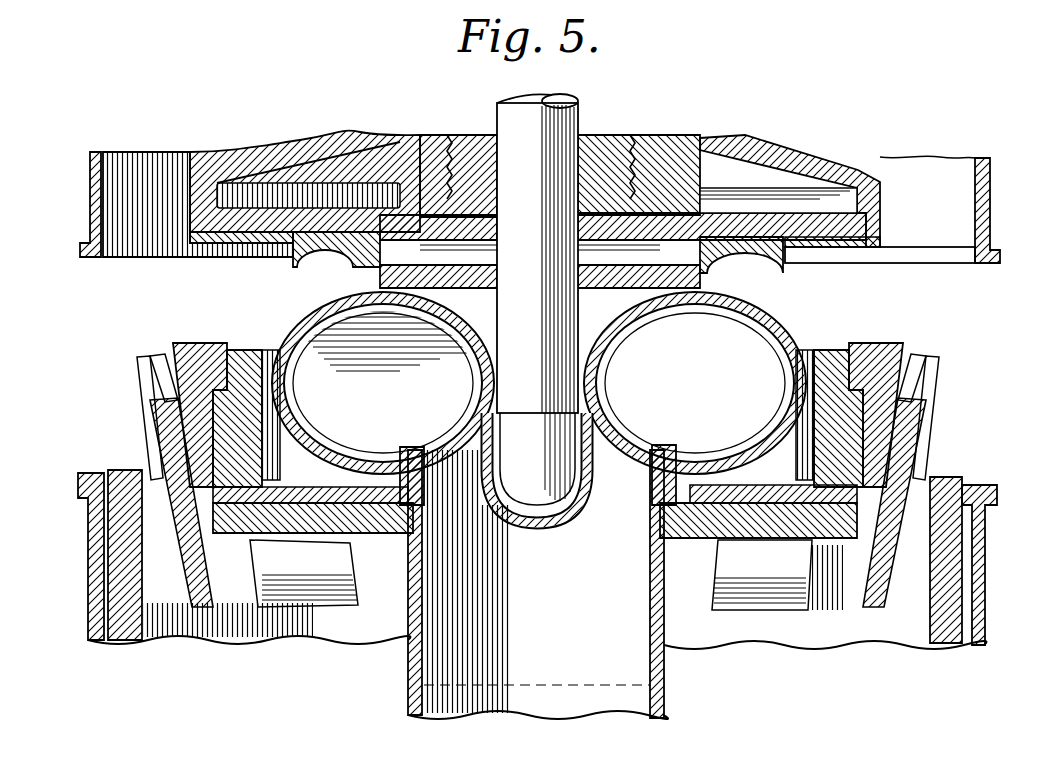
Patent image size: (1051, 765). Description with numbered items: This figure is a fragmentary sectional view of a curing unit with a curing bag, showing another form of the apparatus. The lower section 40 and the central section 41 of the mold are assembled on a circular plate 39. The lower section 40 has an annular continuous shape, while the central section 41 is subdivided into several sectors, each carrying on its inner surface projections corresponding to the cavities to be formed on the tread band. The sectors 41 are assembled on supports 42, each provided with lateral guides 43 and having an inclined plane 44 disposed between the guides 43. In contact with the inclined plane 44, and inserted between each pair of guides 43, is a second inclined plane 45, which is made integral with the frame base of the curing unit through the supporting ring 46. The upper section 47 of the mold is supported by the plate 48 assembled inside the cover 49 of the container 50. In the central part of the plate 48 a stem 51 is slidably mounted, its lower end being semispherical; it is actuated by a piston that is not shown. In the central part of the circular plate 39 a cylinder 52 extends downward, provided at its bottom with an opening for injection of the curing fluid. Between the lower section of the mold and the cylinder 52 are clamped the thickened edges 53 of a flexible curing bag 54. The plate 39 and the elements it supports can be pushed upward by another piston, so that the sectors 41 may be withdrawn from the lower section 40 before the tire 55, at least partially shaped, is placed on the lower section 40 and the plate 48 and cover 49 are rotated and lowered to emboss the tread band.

The circular plate 39 is at (771, 527).
The lower section 40 is at (712, 504).
The central section 41 is at (246, 350).
The supports 42 is at (196, 343).
The lateral guides 43 is at (141, 357).
The inclined plane 44 is at (160, 378).
The second inclined plane 45 is at (168, 434).
The supporting ring 46 is at (948, 486).
The upper section 47 is at (775, 275).
The plate 48 is at (756, 142).
The cover 49 is at (990, 178).
The container 50 is at (988, 548).
The stem 51 is at (500, 112).
The cylinder 52 is at (616, 698).
The thickened edges 53 is at (672, 470).
The flexible curing bag 54 is at (557, 530).
The tire 55 is at (286, 332).